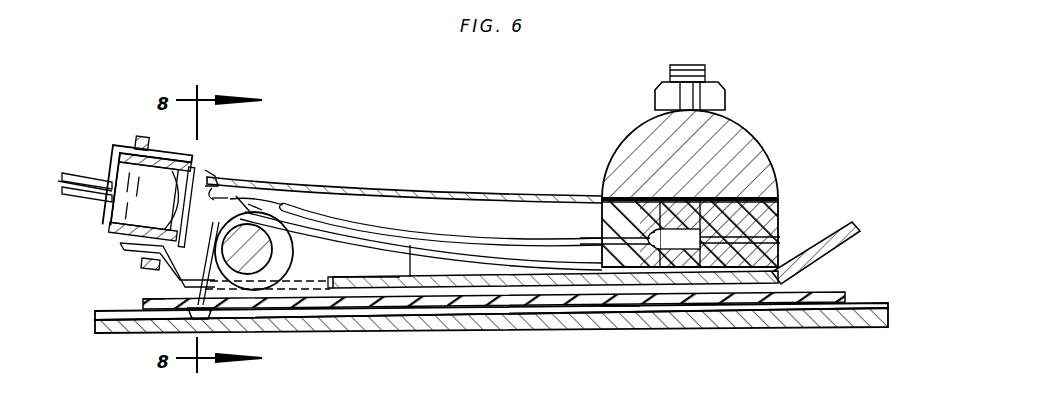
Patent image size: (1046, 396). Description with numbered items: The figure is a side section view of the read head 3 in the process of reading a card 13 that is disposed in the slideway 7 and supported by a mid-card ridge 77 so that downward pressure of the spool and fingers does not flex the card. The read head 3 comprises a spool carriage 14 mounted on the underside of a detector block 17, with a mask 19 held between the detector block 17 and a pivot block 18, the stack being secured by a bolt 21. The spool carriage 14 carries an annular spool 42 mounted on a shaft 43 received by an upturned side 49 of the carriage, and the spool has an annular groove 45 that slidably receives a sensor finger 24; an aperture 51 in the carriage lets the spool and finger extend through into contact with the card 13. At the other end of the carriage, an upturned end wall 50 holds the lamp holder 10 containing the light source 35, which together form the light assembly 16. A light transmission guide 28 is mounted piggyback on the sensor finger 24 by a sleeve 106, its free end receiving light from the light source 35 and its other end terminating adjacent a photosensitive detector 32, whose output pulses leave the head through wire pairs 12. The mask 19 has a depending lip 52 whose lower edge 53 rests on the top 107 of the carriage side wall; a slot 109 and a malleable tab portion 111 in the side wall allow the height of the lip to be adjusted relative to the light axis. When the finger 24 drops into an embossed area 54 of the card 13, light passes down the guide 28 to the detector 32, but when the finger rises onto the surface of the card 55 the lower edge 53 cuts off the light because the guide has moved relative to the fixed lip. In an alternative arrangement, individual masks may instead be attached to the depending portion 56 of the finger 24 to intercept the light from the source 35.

The read head 3 is at (696, 145).
The slideway 7 is at (478, 323).
The lamp holder 10 is at (166, 149).
The wire pairs 12 is at (790, 240).
The card 13 is at (407, 302).
The spool carriage 14 is at (540, 283).
The light assembly 16 is at (106, 145).
The detector block 17 is at (598, 223).
The pivot block 18 is at (735, 159).
The mask 19 is at (352, 190).
The bolt 21 is at (700, 76).
The sensor finger 24 is at (472, 262).
The light transmission guide 28 is at (539, 239).
The photosensitive detector 32 is at (680, 239).
The light source 35 is at (159, 197).
The annular spool 42 is at (293, 262).
The shaft 43 is at (257, 257).
The annular groove 45 is at (280, 284).
The upturned side 49 is at (392, 274).
The upturned end wall 50 is at (140, 134).
The aperture 51 is at (330, 277).
The depending lip 52 is at (214, 176).
The lower edge 53 is at (225, 194).
The embossed area 54 is at (215, 312).
The surface of the card 55 is at (162, 300).
The depending portion 56 is at (255, 207).
The ridge 77 is at (600, 308).
The sleeve 106 is at (246, 178).
The top of carriage side wall 107 is at (283, 208).
The slot 109 is at (142, 264).
The tab portion 111 is at (206, 158).